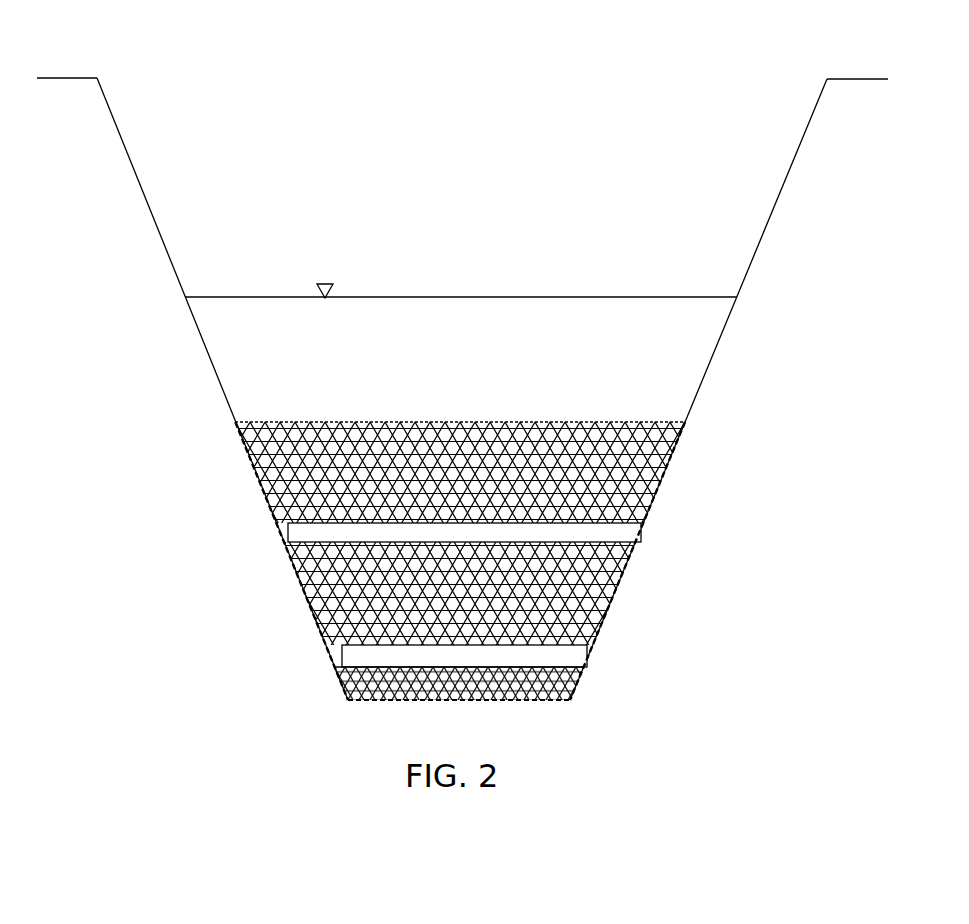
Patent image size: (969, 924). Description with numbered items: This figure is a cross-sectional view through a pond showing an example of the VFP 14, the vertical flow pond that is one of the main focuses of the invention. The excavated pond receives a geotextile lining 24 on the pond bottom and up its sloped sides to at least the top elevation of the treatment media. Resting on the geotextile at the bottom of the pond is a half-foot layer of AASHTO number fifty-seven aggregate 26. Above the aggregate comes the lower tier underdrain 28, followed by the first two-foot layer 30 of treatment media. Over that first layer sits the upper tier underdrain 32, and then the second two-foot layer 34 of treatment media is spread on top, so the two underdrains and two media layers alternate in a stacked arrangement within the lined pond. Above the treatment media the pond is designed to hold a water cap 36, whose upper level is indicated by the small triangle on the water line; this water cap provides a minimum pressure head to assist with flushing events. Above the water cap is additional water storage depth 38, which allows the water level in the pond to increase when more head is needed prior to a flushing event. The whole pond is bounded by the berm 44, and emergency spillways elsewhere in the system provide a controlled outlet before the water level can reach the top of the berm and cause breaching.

The VFP 14 is at (222, 681).
The geotextile lining 24 is at (307, 597).
The AASHTO #57 aggregate layer 26 is at (567, 683).
The lower tier underdrain 28 is at (352, 660).
The first layer of treatment media 30 is at (588, 602).
The upper tier underdrain 32 is at (613, 533).
The second layer of treatment media 34 is at (632, 488).
The water cap 36 is at (230, 349).
The additional water storage depth 38 is at (750, 208).
The berm 44 is at (73, 78).